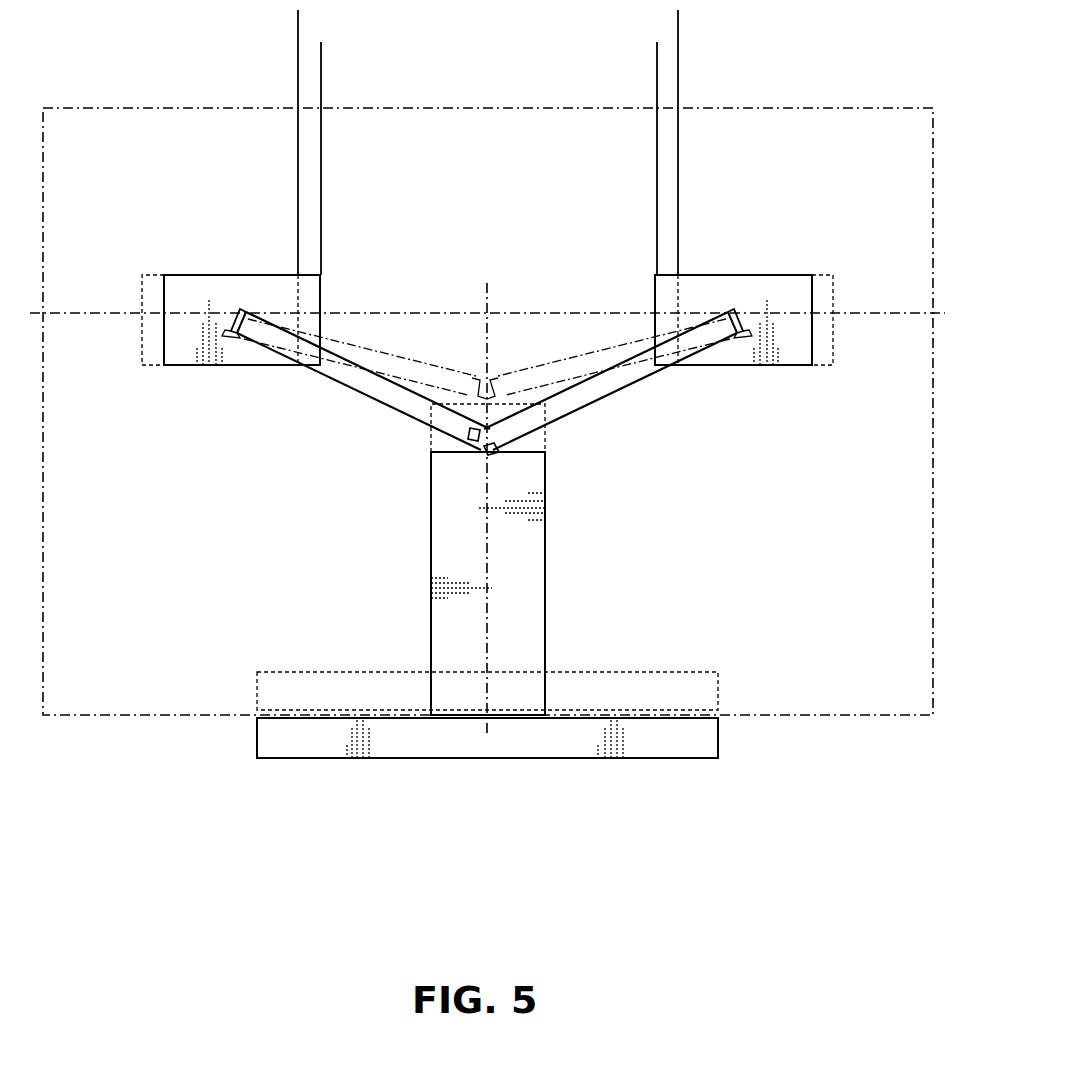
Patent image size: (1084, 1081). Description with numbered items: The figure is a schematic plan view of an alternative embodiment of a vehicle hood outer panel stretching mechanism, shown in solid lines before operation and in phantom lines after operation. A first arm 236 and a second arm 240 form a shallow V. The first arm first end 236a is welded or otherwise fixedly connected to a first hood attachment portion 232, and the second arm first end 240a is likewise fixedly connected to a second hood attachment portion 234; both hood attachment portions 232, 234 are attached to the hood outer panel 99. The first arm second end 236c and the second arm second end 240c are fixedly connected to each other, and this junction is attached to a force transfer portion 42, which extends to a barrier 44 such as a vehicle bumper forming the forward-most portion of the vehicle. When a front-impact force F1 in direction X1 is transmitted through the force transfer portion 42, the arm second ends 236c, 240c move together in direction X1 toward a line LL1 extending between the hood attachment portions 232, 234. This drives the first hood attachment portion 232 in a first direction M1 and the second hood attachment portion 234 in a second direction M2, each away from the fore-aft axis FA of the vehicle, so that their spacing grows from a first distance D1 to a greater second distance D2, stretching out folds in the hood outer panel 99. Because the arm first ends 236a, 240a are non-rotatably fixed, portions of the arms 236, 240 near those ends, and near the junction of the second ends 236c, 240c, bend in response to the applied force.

The hood outer panel 99 is at (800, 107).
The first hood attachment portion 232 is at (222, 288).
The second hood attachment portion 234 is at (755, 285).
The first arm 236 is at (363, 388).
The first arm first end 236a is at (245, 338).
The first arm second end 236c is at (470, 447).
The second arm 240 is at (588, 393).
The second arm first end 240a is at (727, 332).
The second arm second end 240c is at (497, 452).
The force transfer portion 42 is at (525, 630).
The barrier 44 is at (377, 745).
The fore-aft axis FA is at (488, 290).
The line LL1 is at (905, 320).
The first distance D1 is at (651, 53).
The second distance D2 is at (672, 20).
The first direction M1 is at (118, 293).
The second direction M2 is at (892, 293).
The direction X1 is at (205, 672).
The front-impact force F1 is at (487, 768).